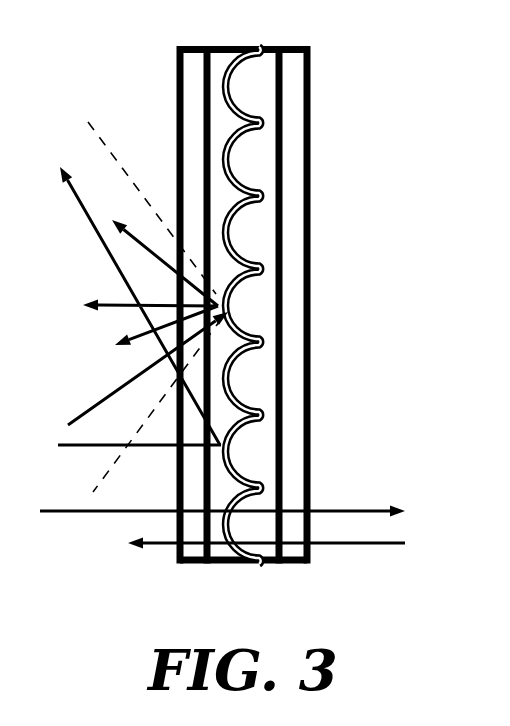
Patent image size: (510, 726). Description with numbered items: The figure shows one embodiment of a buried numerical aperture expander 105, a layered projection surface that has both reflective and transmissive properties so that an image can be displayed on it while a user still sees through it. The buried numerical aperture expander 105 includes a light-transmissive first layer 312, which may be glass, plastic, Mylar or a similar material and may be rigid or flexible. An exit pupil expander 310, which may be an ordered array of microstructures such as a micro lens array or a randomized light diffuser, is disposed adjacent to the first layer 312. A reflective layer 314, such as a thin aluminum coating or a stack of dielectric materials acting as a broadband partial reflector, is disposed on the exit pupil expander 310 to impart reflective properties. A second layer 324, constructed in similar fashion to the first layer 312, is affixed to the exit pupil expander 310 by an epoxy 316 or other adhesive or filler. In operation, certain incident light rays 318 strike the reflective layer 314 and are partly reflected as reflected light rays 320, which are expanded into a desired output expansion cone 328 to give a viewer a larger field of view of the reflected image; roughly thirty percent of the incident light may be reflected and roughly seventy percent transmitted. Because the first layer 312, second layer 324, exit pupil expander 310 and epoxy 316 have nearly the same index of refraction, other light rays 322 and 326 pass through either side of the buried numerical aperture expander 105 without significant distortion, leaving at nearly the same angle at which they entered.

The buried numerical aperture expander 105 is at (347, 100).
The exit pupil expander 310 is at (258, 168).
The first layer 312 is at (310, 78).
The reflective layer 314 is at (232, 110).
The epoxy 316 is at (217, 468).
The incident light rays 318 is at (148, 362).
The reflected light rays 320 is at (143, 243).
The transmitted light rays 322 is at (343, 546).
The second layer 324 is at (177, 65).
The transmitted light rays 326 is at (341, 508).
The output expansion cone 328 is at (128, 178).